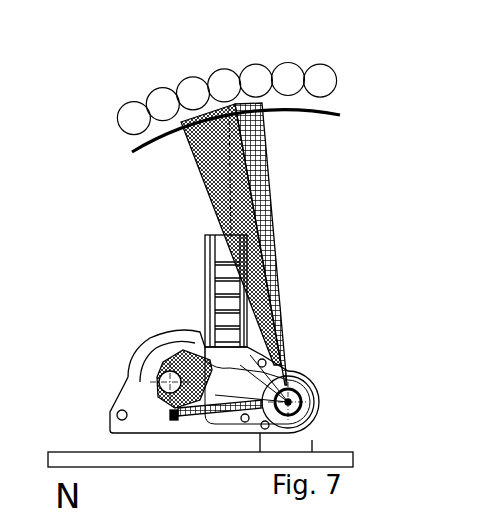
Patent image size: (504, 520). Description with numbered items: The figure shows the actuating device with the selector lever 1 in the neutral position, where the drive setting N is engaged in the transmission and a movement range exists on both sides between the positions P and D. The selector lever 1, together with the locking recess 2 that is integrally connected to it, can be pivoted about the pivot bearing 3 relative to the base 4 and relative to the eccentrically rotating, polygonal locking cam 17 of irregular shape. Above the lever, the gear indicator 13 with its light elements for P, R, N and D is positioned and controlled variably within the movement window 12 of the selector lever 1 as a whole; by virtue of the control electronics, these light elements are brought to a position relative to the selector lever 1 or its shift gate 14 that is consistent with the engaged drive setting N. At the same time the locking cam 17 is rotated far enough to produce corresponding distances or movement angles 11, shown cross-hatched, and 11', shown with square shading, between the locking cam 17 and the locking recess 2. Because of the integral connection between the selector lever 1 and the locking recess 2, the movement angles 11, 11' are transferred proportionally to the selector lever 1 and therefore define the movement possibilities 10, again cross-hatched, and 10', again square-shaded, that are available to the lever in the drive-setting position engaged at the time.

The selector lever 1 is at (190, 270).
The locking recess 2 is at (165, 420).
The pivot bearing 3 is at (288, 402).
The base 4 is at (293, 450).
The movement possibility 10 is at (205, 234).
The movement possibility 10' is at (297, 244).
The movement angle 11 is at (169, 346).
The movement angle 11' is at (168, 464).
The movement window 12 is at (107, 58).
The gear indicator 13 is at (106, 126).
The shift gate 14 is at (132, 152).
The locking cam 17 is at (190, 413).